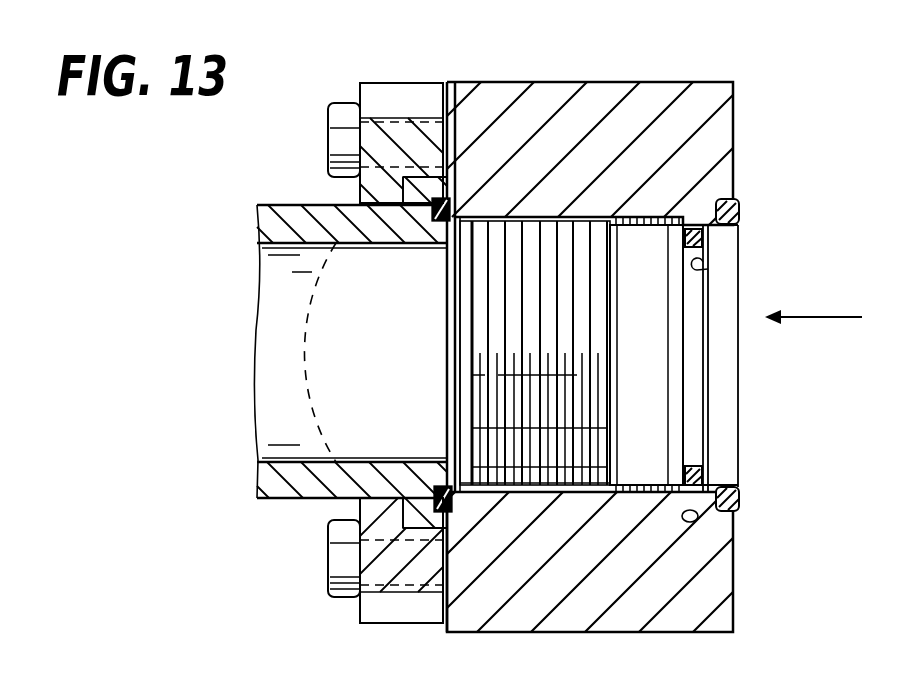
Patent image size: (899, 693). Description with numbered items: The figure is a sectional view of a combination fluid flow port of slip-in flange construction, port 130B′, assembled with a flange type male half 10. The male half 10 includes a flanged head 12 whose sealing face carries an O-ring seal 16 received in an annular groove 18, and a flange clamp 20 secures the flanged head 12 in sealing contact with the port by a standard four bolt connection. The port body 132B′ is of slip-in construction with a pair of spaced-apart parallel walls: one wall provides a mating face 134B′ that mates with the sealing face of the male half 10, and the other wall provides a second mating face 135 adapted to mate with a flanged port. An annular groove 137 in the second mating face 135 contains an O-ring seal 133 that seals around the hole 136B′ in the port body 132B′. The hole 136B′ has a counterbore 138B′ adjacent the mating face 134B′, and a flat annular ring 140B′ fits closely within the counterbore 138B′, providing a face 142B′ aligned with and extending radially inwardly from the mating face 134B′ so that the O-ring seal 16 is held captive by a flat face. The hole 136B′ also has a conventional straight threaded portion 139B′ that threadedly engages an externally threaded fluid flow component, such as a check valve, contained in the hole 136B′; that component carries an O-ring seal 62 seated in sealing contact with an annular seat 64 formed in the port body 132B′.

The male half 10 is at (298, 180).
The flanged head 12 is at (257, 228).
The O-ring seal 16 is at (432, 243).
The annular groove 18 is at (398, 248).
The flange clamp 20 is at (372, 613).
The O-ring seal 62 is at (706, 235).
The annular seat 64 is at (703, 262).
The port 130B′ is at (642, 75).
The port body 132B′ is at (705, 97).
The O-ring seal 133 is at (741, 502).
The mating face 134B′ is at (447, 612).
The second mating face 135 is at (735, 583).
The hole 136B′ is at (714, 352).
The annular groove 137 is at (698, 516).
The counterbore 138B′ is at (456, 213).
The straight threaded portion 139B′ is at (647, 489).
The flat annular ring 140B′ is at (447, 438).
The face 142B′ is at (452, 350).